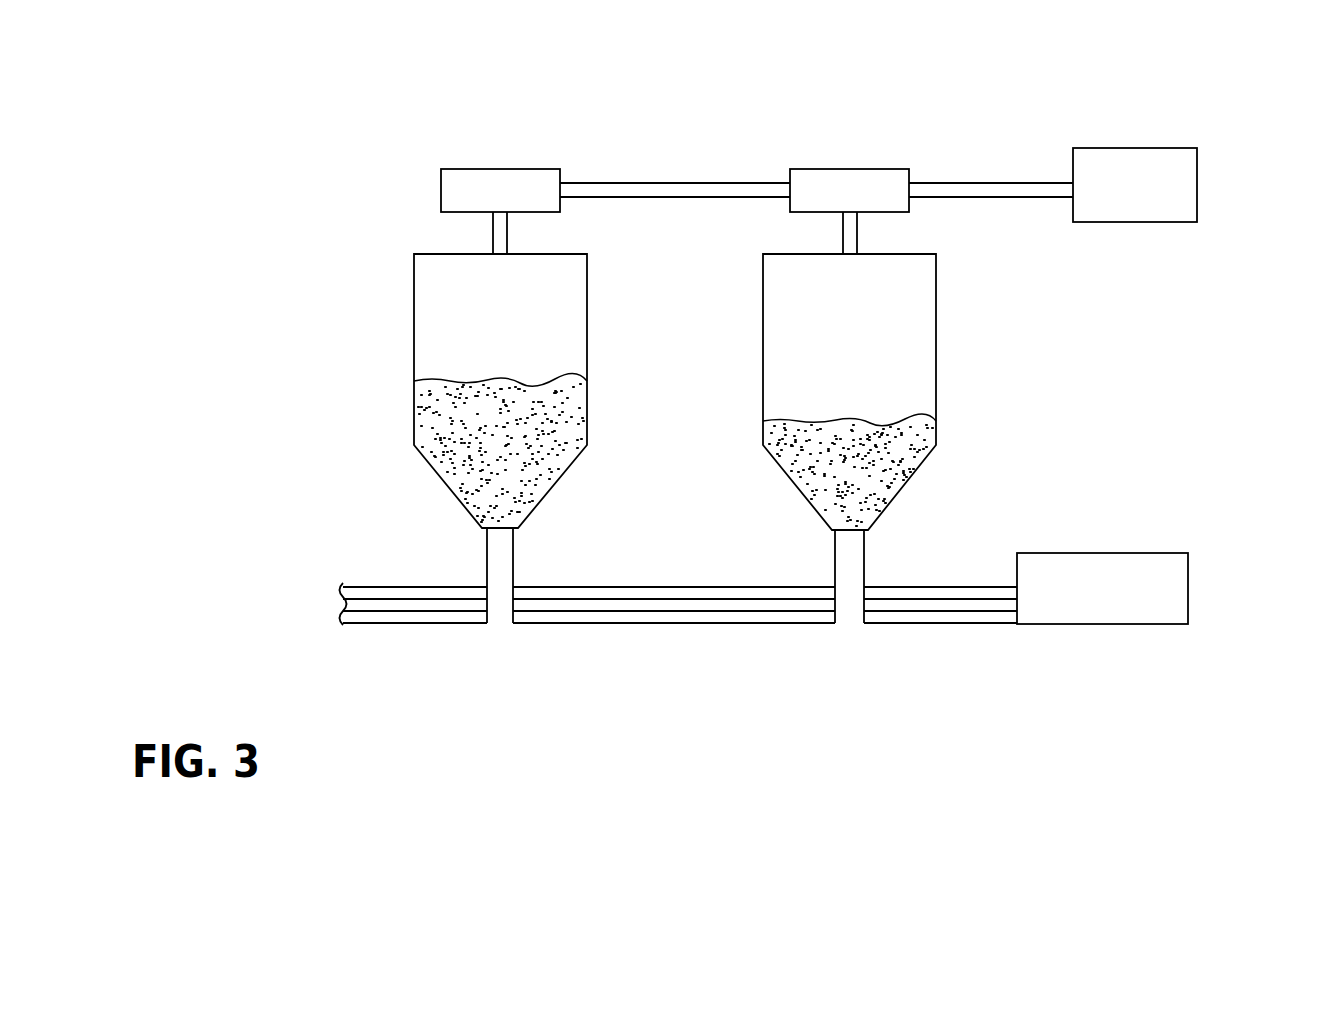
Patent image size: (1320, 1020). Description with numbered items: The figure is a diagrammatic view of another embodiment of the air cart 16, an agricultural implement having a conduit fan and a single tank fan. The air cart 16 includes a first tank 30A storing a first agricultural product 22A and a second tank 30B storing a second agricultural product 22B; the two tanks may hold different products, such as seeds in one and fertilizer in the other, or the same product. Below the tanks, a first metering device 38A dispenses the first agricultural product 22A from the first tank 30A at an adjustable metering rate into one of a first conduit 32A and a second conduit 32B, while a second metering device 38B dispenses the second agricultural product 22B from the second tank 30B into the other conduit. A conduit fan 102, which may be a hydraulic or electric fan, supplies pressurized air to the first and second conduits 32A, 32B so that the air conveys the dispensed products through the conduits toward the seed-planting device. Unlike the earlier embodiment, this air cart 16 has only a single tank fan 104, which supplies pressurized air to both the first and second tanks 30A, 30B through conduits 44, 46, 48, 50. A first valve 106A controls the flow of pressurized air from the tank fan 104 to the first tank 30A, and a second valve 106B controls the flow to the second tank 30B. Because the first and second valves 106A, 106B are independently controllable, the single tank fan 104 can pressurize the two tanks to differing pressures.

The air cart 16 is at (330, 171).
The first valve 106A is at (495, 169).
The second valve 106B is at (845, 169).
The conduit 46 is at (668, 186).
The conduit 44 is at (957, 186).
The tank fan 104 is at (1197, 182).
The conduit 48 is at (507, 240).
The conduit 50 is at (857, 240).
The first tank 30A is at (587, 369).
The second tank 30B is at (936, 369).
The first agricultural product 22A is at (450, 380).
The second agricultural product 22B is at (800, 421).
The first metering device 38A is at (513, 566).
The second metering device 38B is at (864, 566).
The first conduit 32A is at (637, 590).
The second conduit 32B is at (680, 615).
The conduit fan 102 is at (1107, 553).